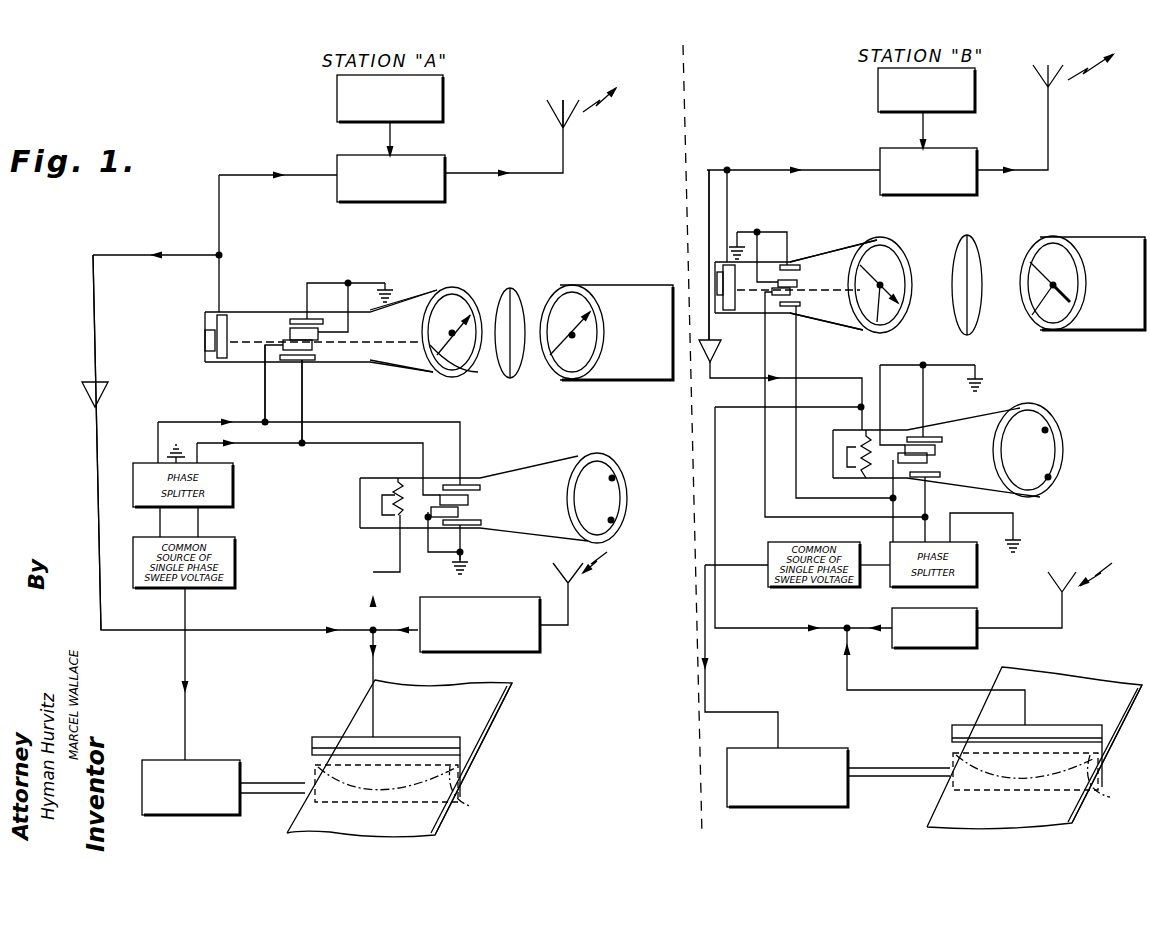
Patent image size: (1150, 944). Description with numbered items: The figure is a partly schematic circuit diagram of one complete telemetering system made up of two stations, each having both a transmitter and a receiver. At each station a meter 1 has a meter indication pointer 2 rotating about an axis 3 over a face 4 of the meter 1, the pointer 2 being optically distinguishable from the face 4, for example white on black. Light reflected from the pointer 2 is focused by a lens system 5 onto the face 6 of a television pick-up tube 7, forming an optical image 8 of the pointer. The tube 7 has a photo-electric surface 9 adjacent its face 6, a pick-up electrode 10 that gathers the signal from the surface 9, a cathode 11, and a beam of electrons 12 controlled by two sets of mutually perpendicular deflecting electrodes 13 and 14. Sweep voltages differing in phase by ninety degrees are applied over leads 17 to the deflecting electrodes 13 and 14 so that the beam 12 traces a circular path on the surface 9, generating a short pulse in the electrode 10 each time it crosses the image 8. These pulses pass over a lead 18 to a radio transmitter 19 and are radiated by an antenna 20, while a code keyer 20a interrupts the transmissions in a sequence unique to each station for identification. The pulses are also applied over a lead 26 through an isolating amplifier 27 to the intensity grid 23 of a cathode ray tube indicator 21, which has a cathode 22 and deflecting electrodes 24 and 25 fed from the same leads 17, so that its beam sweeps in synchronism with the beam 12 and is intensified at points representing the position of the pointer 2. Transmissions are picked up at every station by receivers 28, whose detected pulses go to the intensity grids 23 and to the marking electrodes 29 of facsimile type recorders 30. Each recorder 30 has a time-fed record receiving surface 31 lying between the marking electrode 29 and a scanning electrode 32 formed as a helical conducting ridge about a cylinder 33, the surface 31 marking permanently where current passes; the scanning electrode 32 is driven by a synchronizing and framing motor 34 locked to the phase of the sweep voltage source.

The meter 1 is at (630, 276).
The meter indication pointer 2 is at (553, 365).
The axis 3 is at (805, 299).
The face of the meter 4 is at (590, 360).
The lens system 5 is at (515, 312).
The face of the television pick-up tube 6 is at (420, 372).
The television pick-up tube 7 is at (407, 300).
The optical image 8 is at (872, 325).
The photo-electric surface 9 is at (446, 378).
The pick-up electrode 10 is at (229, 364).
The cathode 11 is at (205, 339).
The beam of electrons 12 is at (395, 340).
The beam deflecting electrodes 13 is at (305, 319).
The beam deflecting electrodes 14 is at (312, 355).
The leads 17 is at (302, 402).
The lead 18 is at (265, 178).
The radio transmitter 19 is at (437, 195).
The antenna 20 is at (568, 120).
The code keyer 20a is at (677, 95).
The cathode ray tube indicator 21 is at (570, 458).
The cathode 22 is at (382, 502).
The intensity grid 23 is at (406, 479).
The deflecting electrodes 24 is at (472, 486).
The deflecting electrodes 25 is at (468, 501).
The lead 26 is at (94, 298).
The isolating amplifier 27 is at (88, 396).
The receiver 28 is at (516, 590).
The marking electrode 29 is at (340, 737).
The facsimile type recorder 30 is at (418, 725).
The record receiving surface 31 is at (500, 712).
The scanning electrode 32 is at (718, 789).
The cylinder 33 is at (306, 800).
The synchronizing and framing motor 34 is at (229, 740).